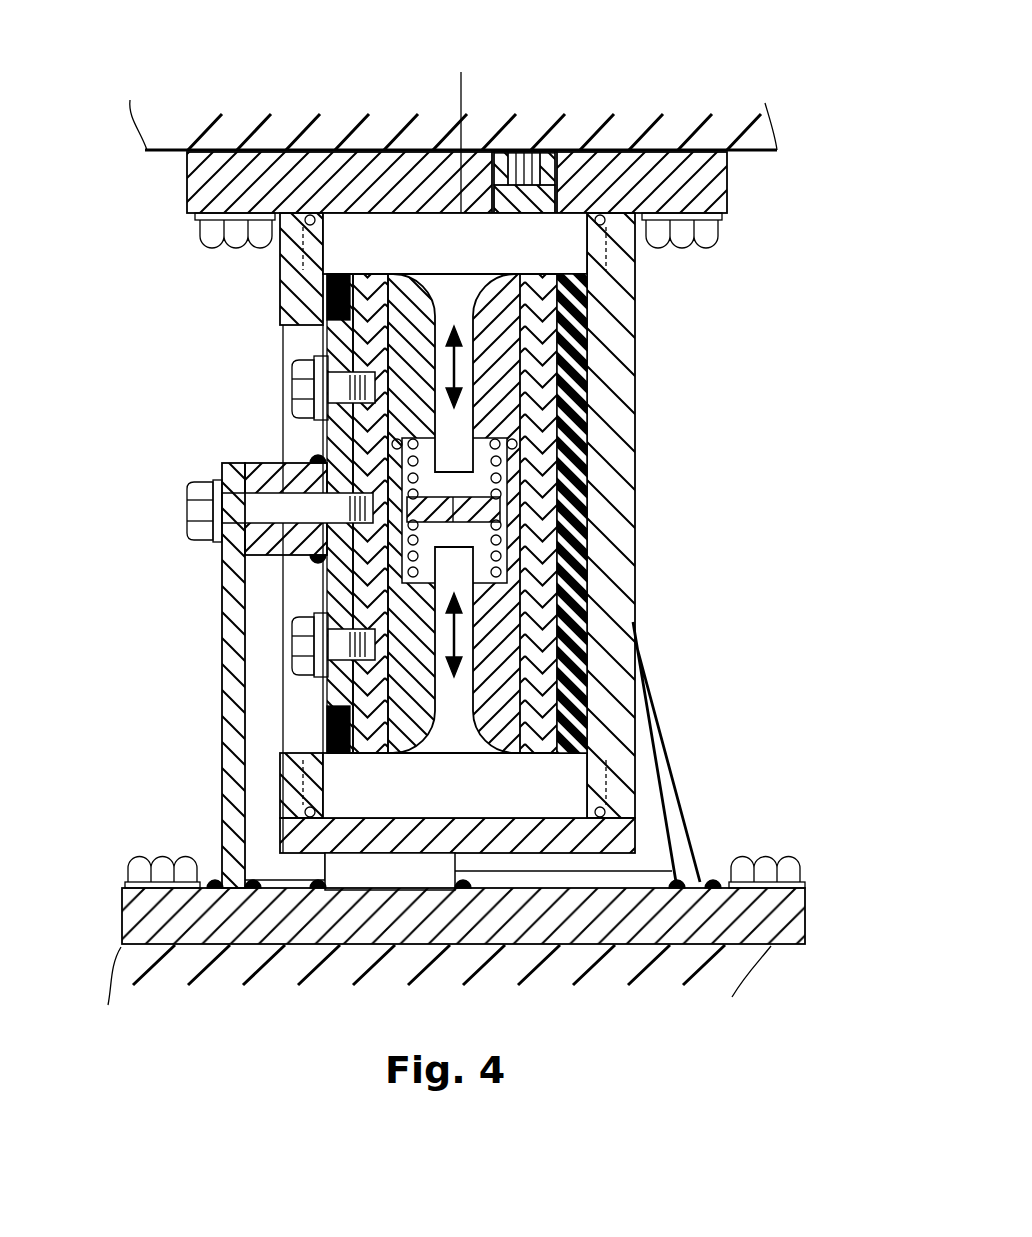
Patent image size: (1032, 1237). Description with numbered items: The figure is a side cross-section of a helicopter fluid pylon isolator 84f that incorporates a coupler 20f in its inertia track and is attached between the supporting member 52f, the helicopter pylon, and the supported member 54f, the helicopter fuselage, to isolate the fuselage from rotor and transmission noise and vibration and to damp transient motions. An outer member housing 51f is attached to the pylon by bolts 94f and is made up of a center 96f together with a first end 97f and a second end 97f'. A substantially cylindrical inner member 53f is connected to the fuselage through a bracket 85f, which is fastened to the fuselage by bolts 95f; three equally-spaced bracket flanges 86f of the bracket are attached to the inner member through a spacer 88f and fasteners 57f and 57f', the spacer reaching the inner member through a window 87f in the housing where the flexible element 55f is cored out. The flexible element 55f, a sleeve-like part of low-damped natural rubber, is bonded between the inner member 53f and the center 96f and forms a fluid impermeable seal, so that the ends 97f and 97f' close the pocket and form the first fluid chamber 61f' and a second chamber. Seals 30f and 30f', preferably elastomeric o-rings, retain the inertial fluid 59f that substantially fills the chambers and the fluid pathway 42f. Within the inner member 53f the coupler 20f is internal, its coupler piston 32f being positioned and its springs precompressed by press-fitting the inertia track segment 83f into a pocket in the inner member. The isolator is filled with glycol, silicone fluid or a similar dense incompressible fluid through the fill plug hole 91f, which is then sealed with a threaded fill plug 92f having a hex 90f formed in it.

The fluid pylon isolator 84f is at (368, 96).
The supporting member 52f is at (772, 118).
The second end 97f' is at (506, 182).
The fill plug hole 91f is at (596, 152).
The hex 90f is at (522, 153).
The threaded fill plug 92f is at (503, 152).
The inertial fluid 59f is at (462, 75).
The bolts 94f is at (705, 233).
The outer member housing 51f is at (650, 325).
The first fluid chamber 61f' is at (455, 785).
The inertia track segment 83f is at (410, 310).
The inner member 53f is at (590, 528).
The center 96f is at (590, 428).
The coupler 20f is at (528, 468).
The coupler piston 32f is at (592, 472).
The fluid pathway 42f is at (455, 725).
The seal 30f' is at (519, 258).
The seal 30f is at (544, 779).
The first end 97f is at (679, 791).
The spacer 88f is at (265, 463).
The fastener 57f is at (231, 521).
The bracket flange 86f is at (232, 740).
The window 87f is at (345, 688).
The fastener 57f' is at (245, 526).
The flexible element 55f is at (590, 584).
The bolts 95f is at (125, 866).
The bracket 85f is at (808, 912).
The supported member 54f is at (773, 947).